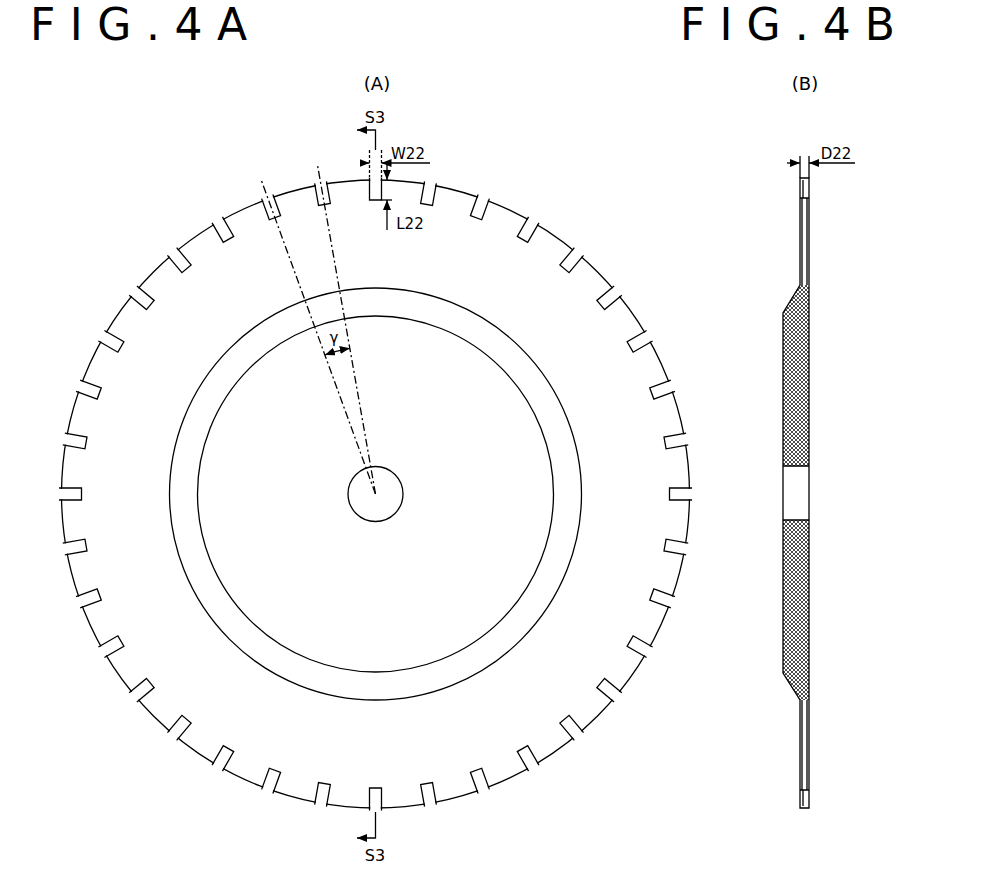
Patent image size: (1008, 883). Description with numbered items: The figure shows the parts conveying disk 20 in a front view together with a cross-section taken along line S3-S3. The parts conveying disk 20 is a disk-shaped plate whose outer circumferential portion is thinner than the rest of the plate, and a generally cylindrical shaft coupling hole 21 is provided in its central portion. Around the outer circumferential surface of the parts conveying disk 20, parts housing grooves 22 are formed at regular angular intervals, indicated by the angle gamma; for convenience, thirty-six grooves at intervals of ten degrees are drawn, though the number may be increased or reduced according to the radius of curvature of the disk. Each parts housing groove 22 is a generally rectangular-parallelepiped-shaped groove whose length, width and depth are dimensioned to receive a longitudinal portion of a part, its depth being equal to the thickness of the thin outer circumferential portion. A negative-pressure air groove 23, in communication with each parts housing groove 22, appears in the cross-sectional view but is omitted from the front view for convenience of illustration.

In FIG. 4A, the parts conveying disk 20 is at (121, 308).
In FIG. 4B, the parts conveying disk 20 is at (783, 327).
In FIG. 4A, the shaft coupling hole 21 is at (385, 478).
In FIG. 4B, the shaft coupling hole 21 is at (803, 480).
In FIG. 4A, the parts housing groove 22 is at (483, 200).
In FIG. 4B, the parts housing groove 22 is at (809, 187).
In FIG. 4B, the negative-pressure air groove 23 is at (809, 229).